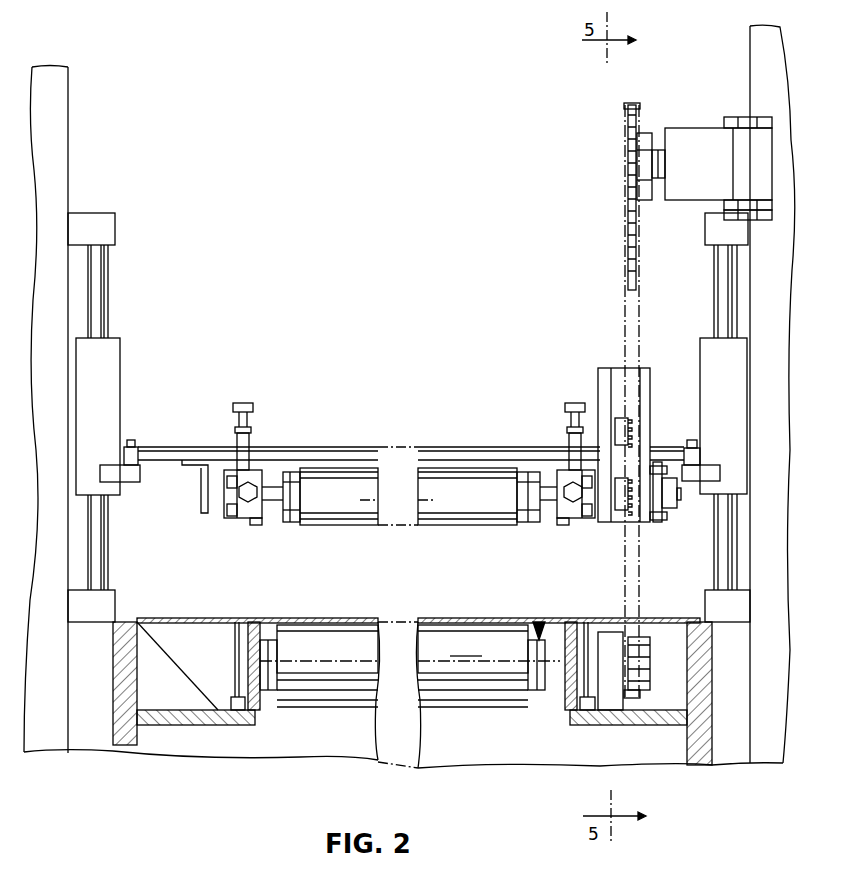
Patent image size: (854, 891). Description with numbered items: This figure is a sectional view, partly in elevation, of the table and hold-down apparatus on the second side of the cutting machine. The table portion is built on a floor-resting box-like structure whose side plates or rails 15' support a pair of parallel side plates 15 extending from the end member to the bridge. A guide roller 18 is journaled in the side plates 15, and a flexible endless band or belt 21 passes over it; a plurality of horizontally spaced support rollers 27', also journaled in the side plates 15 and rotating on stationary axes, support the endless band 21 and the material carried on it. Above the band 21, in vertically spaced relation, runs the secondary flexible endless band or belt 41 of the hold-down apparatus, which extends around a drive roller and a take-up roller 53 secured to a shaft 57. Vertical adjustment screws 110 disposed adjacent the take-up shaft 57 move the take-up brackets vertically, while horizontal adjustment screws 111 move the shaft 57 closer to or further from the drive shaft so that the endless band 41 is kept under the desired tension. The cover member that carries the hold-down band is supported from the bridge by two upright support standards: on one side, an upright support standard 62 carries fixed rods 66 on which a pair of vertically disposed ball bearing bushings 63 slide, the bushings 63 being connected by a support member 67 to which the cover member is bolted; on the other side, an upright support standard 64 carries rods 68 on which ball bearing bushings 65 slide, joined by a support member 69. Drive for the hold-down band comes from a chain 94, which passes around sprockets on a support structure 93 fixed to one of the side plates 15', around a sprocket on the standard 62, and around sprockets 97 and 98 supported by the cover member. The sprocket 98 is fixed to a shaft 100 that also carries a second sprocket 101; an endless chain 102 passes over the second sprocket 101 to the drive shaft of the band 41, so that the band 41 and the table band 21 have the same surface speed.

The side plates 15 is at (413, 681).
The side plates or rails 15' is at (409, 714).
The guide roller 18 is at (443, 710).
The flexible endless band or belt 21 is at (432, 618).
The support rollers 27' is at (410, 666).
The secondary flexible endless band or belt 41 is at (348, 532).
The take-up roller 53 is at (293, 524).
The shaft 57 is at (270, 522).
The upright support standard 62 is at (750, 60).
The ball bearing bushings 63 is at (698, 336).
The upright support standard 64 is at (68, 118).
The ball bearing bushings 65 is at (124, 376).
The rod 66 is at (712, 270).
The support member 67 is at (712, 464).
The rod 68 is at (112, 276).
The support member 69 is at (106, 464).
The support structure 93 is at (608, 700).
The chain 94 is at (627, 195).
The sprocket 97 is at (622, 422).
The sprocket 98 is at (624, 500).
The shaft 100 is at (680, 496).
The second sprocket 101 is at (670, 512).
The endless chain 102 is at (666, 468).
The vertical adjustment screws 110 is at (244, 402).
The horizontal adjustment screws 111 is at (256, 488).